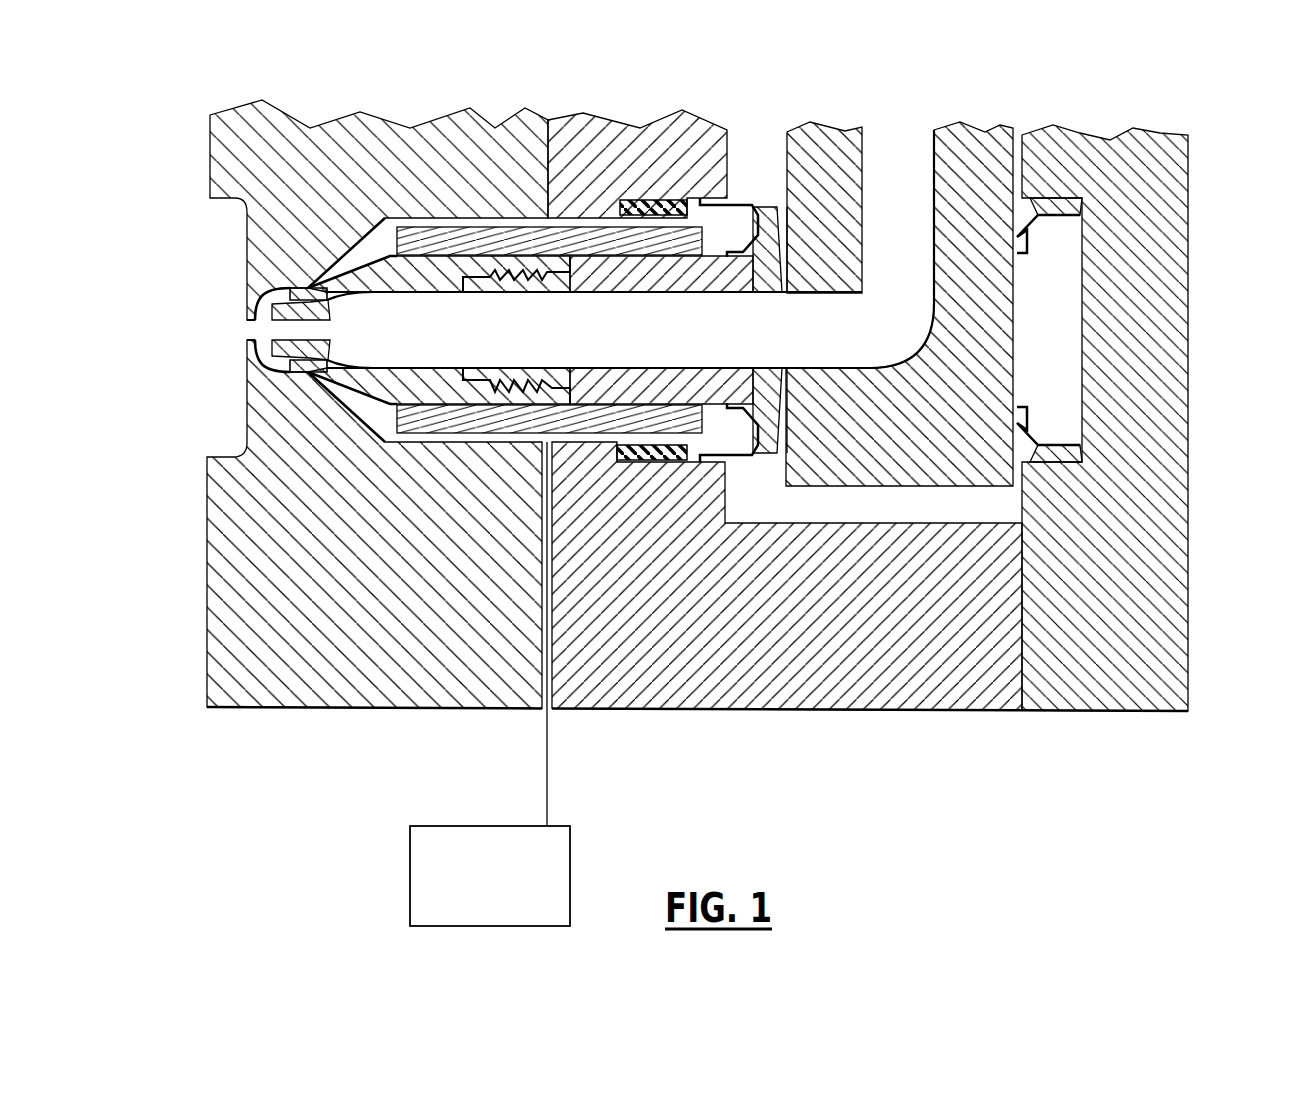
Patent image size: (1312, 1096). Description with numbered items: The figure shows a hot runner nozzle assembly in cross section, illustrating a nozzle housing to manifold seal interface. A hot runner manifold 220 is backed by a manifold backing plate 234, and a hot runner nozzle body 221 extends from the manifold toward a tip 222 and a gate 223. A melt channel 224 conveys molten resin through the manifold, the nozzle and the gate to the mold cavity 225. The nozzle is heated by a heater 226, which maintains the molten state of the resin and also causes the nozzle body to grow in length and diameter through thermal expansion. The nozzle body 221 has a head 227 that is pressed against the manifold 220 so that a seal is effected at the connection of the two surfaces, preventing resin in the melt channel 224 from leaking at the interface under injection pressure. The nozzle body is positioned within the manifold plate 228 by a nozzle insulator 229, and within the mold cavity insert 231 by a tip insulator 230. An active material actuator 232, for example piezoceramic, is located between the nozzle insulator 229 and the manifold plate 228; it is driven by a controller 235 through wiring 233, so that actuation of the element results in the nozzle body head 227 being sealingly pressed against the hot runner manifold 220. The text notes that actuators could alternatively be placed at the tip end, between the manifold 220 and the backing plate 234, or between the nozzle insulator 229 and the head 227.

The hot runner manifold 220 is at (985, 155).
The hot runner nozzle body 221 is at (718, 278).
The tip 222 is at (367, 268).
The gate 223 is at (248, 331).
The melt channel 224 is at (910, 143).
The mold cavity 225 is at (253, 235).
The heater 226 is at (577, 243).
The head 227 is at (782, 228).
The manifold plate 228 is at (823, 662).
The nozzle insulator 229 is at (748, 215).
The tip insulator 230 is at (296, 287).
The mold cavity insert 231 is at (272, 632).
The actuator 232 is at (658, 200).
The wiring 233 is at (547, 598).
The manifold backing plate 234 is at (1140, 608).
The controller 235 is at (412, 868).